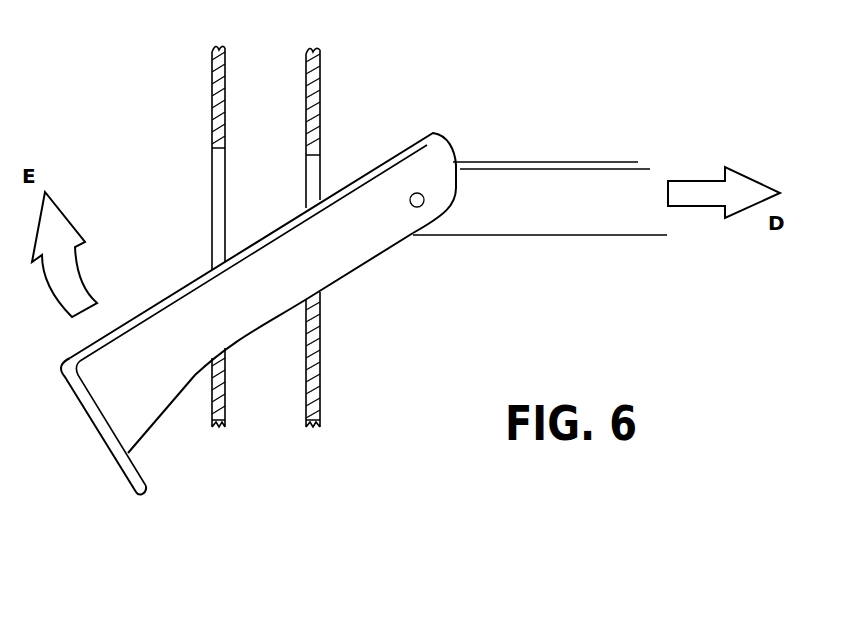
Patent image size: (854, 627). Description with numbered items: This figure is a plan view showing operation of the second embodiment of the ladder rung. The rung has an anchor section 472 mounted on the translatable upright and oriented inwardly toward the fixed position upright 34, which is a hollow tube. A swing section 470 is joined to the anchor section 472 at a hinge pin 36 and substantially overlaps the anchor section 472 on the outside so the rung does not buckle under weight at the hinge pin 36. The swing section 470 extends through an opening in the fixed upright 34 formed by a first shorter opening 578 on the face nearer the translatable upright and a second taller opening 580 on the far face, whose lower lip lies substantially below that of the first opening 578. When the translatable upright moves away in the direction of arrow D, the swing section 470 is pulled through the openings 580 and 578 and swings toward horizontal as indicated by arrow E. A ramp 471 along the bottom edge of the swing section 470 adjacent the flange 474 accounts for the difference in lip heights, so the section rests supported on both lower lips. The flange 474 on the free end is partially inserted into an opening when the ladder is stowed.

The fixed position upright 34 is at (321, 375).
The hinge pin 36 is at (422, 205).
The swing section 470 is at (176, 290).
The ramp portion 471 is at (153, 427).
The anchor section 472 is at (587, 235).
The flange 474 is at (141, 497).
The first shorter opening 578 is at (321, 155).
The second taller opening 580 is at (211, 152).